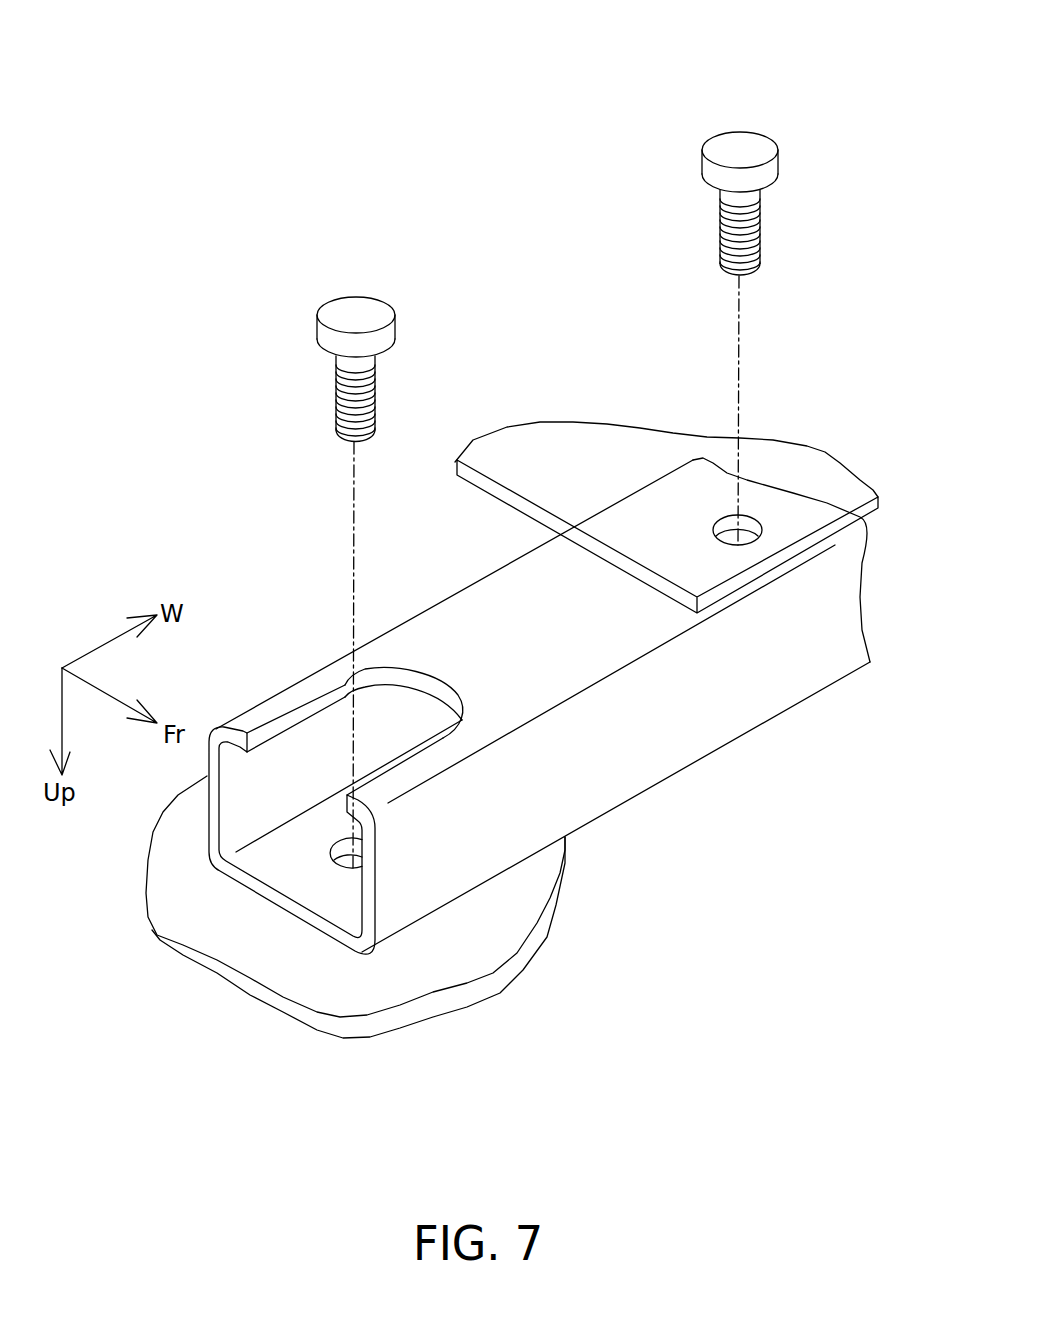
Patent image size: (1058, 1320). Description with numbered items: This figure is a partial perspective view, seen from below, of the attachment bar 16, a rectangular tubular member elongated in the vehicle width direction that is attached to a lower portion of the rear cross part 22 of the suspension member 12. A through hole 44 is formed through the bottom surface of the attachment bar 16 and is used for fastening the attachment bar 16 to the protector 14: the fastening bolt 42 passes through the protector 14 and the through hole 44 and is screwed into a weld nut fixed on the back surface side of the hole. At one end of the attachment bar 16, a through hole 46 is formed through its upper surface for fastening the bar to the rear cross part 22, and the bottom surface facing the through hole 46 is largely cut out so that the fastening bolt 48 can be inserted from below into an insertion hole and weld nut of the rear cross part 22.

The suspension member 12 is at (346, 927).
The protector 14 is at (542, 453).
The attachment bar 16 is at (687, 727).
The rear cross part 22 is at (280, 965).
The fastening bolt 42 is at (748, 140).
The through hole 44 is at (745, 518).
The through hole 46 is at (347, 840).
The fastening bolt 48 is at (360, 305).